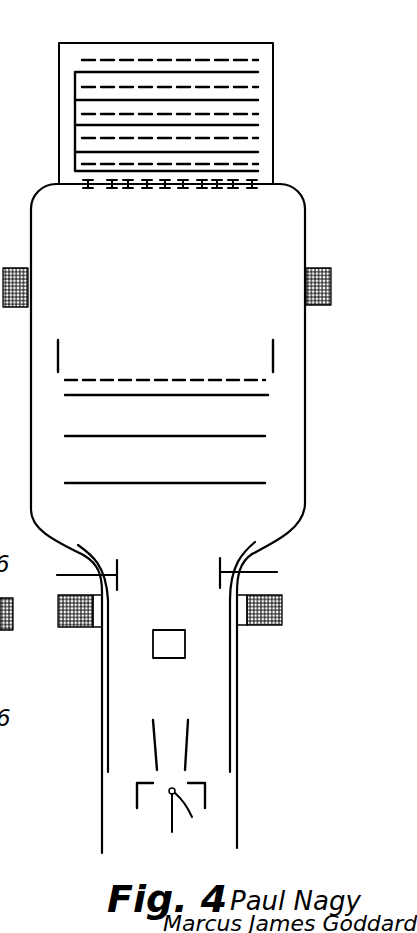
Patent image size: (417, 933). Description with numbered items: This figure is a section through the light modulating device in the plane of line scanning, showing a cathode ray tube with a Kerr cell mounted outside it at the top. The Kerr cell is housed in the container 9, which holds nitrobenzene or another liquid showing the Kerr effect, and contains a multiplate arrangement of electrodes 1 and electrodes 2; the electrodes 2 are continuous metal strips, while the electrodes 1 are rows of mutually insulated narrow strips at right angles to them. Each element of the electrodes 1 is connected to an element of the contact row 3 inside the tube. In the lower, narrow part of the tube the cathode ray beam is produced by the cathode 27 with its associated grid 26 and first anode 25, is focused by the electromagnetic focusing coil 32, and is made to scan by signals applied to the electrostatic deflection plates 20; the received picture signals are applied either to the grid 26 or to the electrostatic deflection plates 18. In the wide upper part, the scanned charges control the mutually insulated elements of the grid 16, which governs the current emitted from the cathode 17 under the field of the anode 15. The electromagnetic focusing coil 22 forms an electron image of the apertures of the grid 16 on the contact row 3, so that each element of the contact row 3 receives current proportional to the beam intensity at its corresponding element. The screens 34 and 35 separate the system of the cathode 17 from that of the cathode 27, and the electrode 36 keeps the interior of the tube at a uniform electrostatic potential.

The electrodes 1 is at (157, 58).
The electrodes 2 is at (77, 126).
The contact row 3 is at (147, 189).
The container 9 is at (59, 90).
The anode 15 is at (60, 345).
The grid 16 is at (142, 378).
The cathode 17 is at (177, 396).
The electrostatic deflection plates 18 is at (170, 652).
The electrostatic deflection plates 20 is at (218, 567).
The electromagnetic focusing coil 22 is at (322, 270).
The first anode 25 is at (152, 724).
The grid 26 is at (208, 795).
The cathode 27 is at (197, 814).
The electromagnetic focusing coil 32 is at (262, 623).
The screen 34 is at (154, 483).
The screen 35 is at (105, 438).
The electrode 36 is at (233, 709).